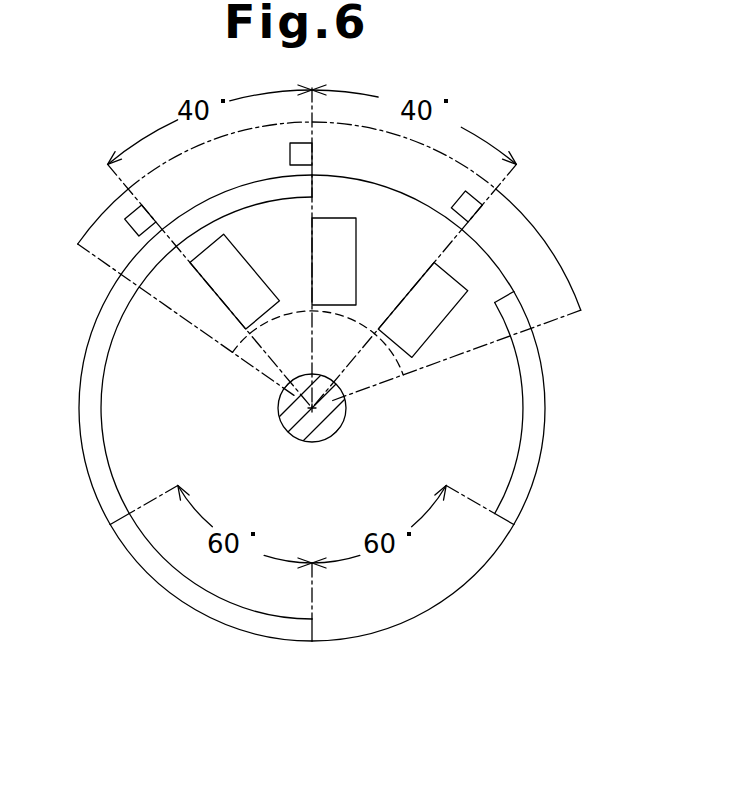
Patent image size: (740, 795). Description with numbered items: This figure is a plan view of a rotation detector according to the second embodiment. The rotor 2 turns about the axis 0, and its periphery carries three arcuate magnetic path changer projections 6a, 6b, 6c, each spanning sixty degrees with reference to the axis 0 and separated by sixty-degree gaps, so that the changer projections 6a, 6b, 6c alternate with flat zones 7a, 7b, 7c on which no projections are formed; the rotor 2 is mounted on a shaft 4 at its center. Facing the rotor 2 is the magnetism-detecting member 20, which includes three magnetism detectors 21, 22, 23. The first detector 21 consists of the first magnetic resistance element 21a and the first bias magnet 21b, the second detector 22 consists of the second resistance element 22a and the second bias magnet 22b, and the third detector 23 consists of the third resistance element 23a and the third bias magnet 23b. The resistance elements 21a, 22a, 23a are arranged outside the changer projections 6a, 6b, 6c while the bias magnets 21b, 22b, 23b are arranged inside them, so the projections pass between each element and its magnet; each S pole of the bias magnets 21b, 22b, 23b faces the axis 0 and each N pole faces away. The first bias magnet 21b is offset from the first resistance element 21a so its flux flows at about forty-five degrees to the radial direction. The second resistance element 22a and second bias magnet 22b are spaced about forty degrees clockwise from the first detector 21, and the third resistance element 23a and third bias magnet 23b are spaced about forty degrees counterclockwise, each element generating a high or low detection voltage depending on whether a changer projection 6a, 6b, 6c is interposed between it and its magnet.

The axis 0 is at (316, 410).
The rotor 2 is at (494, 544).
The rotor shaft 4 is at (290, 430).
The magnetic path changer projection 6a is at (117, 280).
The magnetic path changer projection 6b is at (544, 434).
The magnetic path changer projection 6c is at (267, 597).
The flat zone 7a is at (383, 188).
The flat zone 7b is at (430, 607).
The flat zone 7c is at (79, 418).
The magnetism-detecting member 20 is at (581, 310).
The first magnetism detector 21 is at (372, 248).
The first magnetic resistance element 21a is at (313, 157).
The first bias magnet 21b is at (357, 273).
The second magnetism detector 22 is at (476, 286).
The second magnetic resistance element 22a is at (482, 213).
The second bias magnet 22b is at (464, 281).
The third magnetism detector 23 is at (202, 286).
The third magnetic resistance element 23a is at (150, 236).
The third bias magnet 23b is at (230, 310).